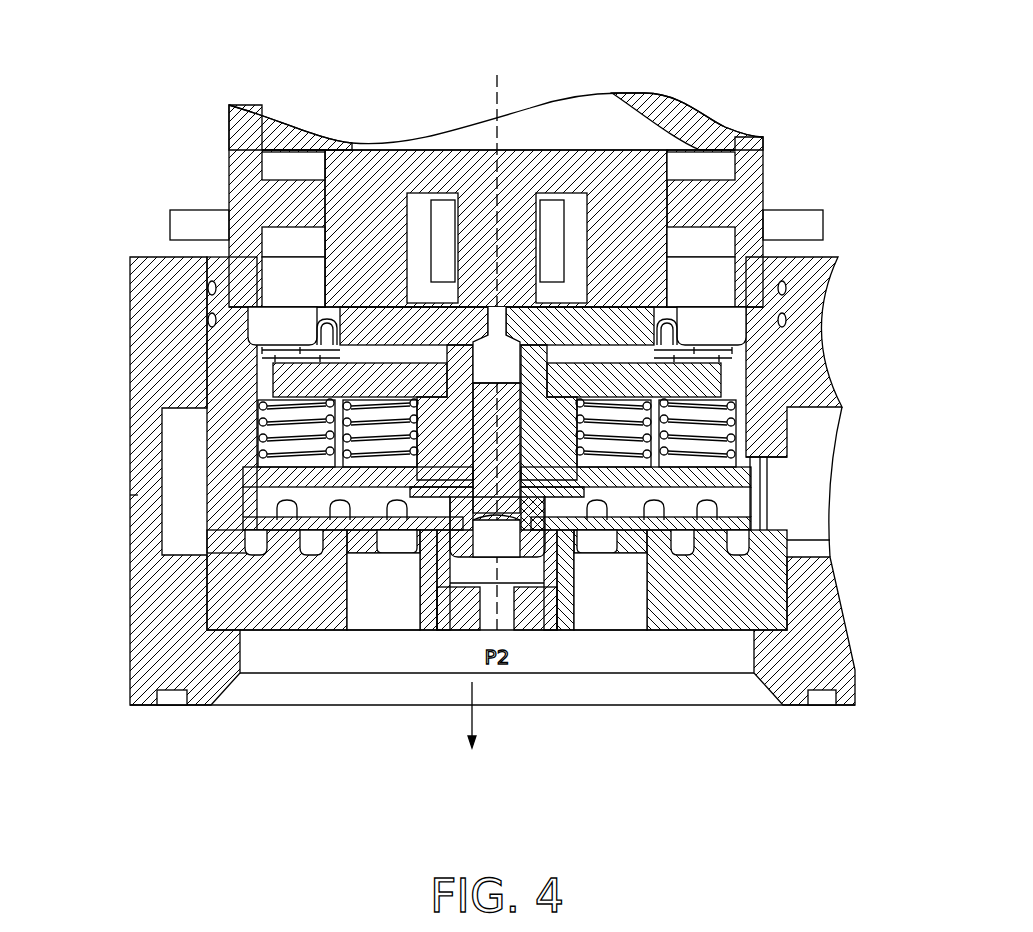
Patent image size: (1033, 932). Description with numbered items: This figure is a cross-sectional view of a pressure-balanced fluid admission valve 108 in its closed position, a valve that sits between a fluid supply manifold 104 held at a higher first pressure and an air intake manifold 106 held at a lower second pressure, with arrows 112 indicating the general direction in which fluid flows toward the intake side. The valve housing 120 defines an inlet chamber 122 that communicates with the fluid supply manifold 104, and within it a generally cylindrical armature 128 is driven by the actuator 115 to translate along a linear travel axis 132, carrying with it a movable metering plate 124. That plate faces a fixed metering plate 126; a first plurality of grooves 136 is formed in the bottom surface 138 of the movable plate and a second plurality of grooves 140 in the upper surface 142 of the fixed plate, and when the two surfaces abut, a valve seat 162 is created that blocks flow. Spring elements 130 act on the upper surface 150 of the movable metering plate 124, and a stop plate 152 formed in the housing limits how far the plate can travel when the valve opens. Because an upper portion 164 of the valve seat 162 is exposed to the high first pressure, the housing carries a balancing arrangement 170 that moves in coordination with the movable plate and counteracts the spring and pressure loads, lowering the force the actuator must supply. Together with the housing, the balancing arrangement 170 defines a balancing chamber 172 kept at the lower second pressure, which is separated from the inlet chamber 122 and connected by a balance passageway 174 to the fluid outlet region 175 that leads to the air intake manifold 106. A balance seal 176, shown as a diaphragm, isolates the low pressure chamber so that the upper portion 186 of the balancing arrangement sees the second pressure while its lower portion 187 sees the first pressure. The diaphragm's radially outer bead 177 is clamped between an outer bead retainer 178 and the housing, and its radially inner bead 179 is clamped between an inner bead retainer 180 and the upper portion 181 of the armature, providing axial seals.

The fluid supply manifold 104 is at (815, 470).
The air intake manifold 106 is at (473, 811).
The fluid admission valve 108 is at (205, 78).
The arrows 112 is at (478, 692).
The actuator 115 is at (550, 192).
The valve housing 120 is at (160, 174).
The inlet chamber 122 is at (240, 480).
The movable metering plate 124 is at (440, 545).
The fixed metering plate 126 is at (220, 553).
The armature 128 is at (405, 305).
The spring elements 130 is at (265, 405).
The linear travel axis 132 is at (492, 78).
The first plurality of grooves 136 is at (237, 473).
The bottom surface 138 is at (735, 542).
The second plurality of grooves 140 is at (258, 548).
The upper surface 142 is at (268, 512).
The upper surface 150 is at (265, 462).
The stop plate 152 is at (205, 470).
The valve seat 162 is at (767, 490).
The upper portion 164 is at (780, 460).
The balancing arrangement 170 is at (648, 292).
The balancing chamber 172 is at (283, 325).
The balance passageway 174 is at (500, 515).
The fluid outlet region 175 is at (360, 700).
The balance seal 176 is at (323, 318).
The radially outer bead 177 is at (212, 316).
The outer bead retainer 178 is at (208, 283).
The radially inner bead 179 is at (235, 350).
The inner bead retainer 180 is at (262, 368).
The upper portion 181 is at (368, 310).
The upper portion 186 is at (572, 275).
The lower portion 187 is at (652, 383).